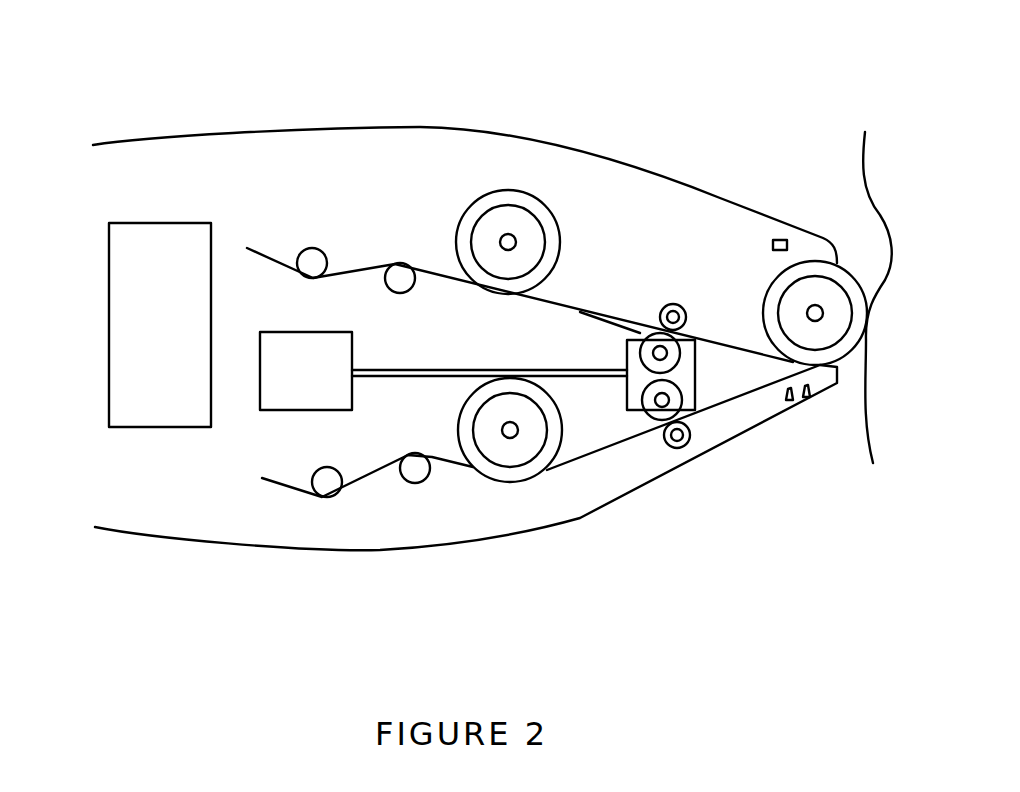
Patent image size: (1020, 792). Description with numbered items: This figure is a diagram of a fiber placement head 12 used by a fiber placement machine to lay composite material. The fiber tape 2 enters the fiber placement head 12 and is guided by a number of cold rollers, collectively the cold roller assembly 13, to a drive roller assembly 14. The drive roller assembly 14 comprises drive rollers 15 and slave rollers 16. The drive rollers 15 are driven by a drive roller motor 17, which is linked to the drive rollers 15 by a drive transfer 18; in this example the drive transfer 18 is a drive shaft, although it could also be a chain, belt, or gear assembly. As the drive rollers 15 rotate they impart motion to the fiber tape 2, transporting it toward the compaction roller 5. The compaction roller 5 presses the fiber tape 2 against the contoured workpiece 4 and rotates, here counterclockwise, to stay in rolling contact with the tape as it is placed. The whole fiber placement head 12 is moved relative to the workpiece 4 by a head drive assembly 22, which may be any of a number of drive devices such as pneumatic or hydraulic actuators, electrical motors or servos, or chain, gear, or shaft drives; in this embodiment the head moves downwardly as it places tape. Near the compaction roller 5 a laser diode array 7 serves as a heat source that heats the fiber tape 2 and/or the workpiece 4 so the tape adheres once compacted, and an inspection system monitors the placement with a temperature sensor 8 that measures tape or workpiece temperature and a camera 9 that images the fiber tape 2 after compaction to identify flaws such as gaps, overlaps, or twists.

The fiber tape 2 is at (262, 250).
The workpiece 4 is at (873, 463).
The compaction roller 5 is at (805, 258).
The laser diode array 7 is at (787, 401).
The temperature sensor 8 is at (810, 398).
The camera 9 is at (778, 240).
The fiber placement head 12 is at (210, 132).
The cold roller assembly 13 is at (400, 265).
The drive roller assembly 14 is at (627, 413).
The drive rollers 15 is at (640, 338).
The slave rollers 16 is at (682, 300).
The drive roller motor 17 is at (273, 412).
The drive transfer 18 is at (400, 380).
The head drive assembly 22 is at (108, 360).